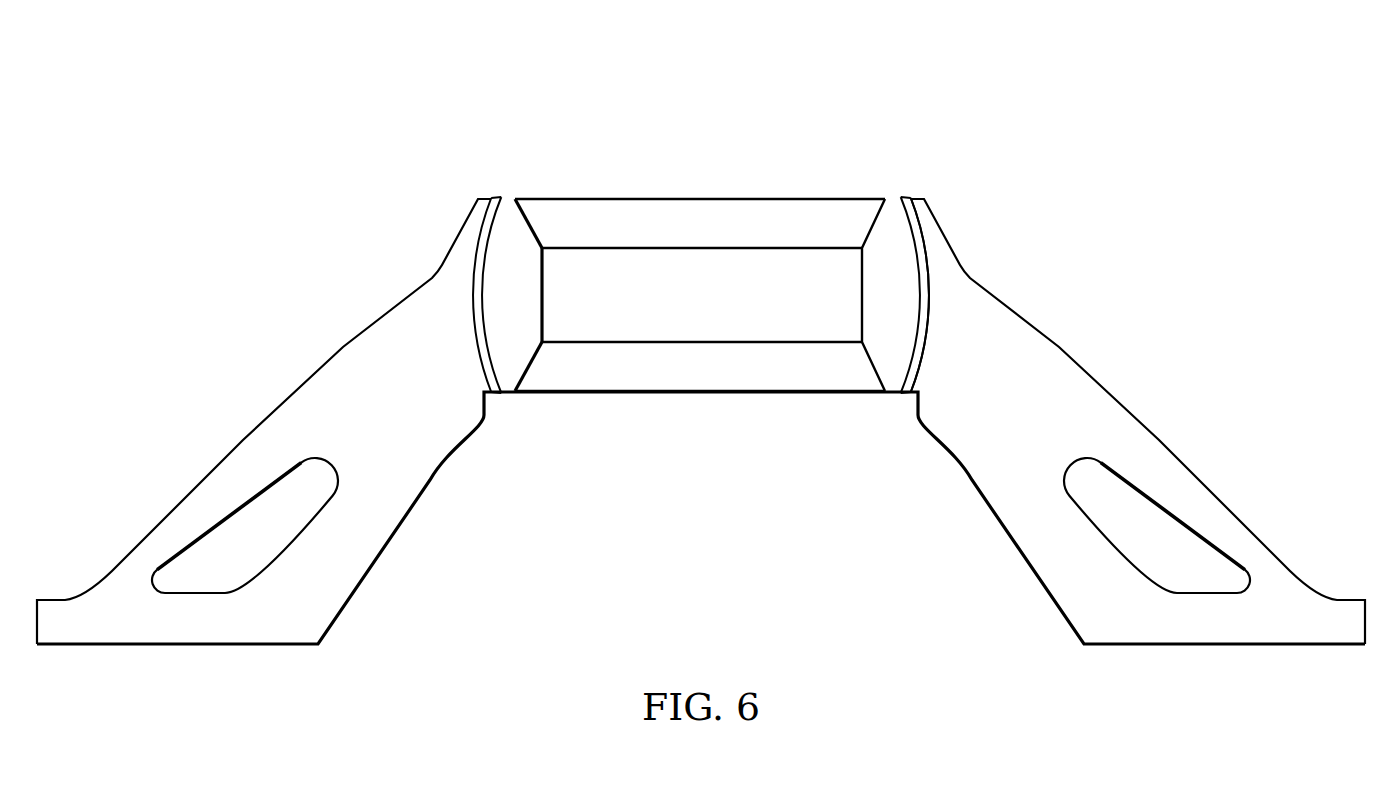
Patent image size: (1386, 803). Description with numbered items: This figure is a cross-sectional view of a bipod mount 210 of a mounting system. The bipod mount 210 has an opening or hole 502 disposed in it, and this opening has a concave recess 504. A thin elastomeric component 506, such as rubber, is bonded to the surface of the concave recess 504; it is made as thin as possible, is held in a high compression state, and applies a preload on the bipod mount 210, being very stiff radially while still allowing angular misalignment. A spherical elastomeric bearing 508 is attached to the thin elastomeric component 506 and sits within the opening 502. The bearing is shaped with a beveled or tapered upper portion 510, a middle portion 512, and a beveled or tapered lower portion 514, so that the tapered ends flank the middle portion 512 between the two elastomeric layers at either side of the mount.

The bipod mount 210 is at (347, 353).
The opening or hole 502 is at (707, 250).
The concave recess 504 is at (928, 330).
The thin elastomeric component 506 is at (488, 213).
The spherical elastomeric bearing 508 is at (756, 207).
The beveled or tapered upper portion 510 is at (530, 215).
The middle portion 512 is at (543, 305).
The beveled or tapered lower portion 514 is at (529, 373).